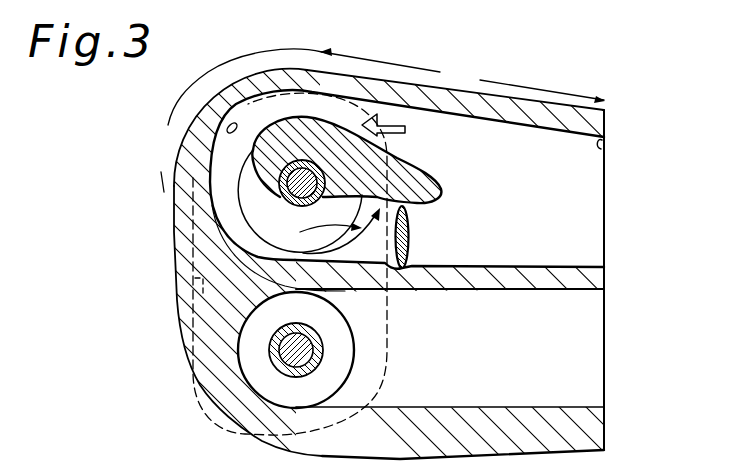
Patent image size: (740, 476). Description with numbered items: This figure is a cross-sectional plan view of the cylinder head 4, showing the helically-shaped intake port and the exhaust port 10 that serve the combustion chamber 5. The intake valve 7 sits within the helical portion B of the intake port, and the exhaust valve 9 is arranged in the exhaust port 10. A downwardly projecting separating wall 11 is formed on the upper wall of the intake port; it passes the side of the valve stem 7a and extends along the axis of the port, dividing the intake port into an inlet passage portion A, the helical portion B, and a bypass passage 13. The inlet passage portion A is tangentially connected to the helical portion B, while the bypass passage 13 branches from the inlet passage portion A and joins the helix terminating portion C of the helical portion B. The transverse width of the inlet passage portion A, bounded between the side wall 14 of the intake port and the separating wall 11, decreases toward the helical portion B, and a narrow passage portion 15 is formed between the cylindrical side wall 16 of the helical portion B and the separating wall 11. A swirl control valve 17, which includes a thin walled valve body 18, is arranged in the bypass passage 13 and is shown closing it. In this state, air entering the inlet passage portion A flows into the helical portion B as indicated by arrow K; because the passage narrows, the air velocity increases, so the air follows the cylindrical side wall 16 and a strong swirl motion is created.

The cylinder head 4 is at (505, 114).
The combustion chamber 5 is at (200, 297).
The intake valve 7 is at (246, 178).
The valve stem 7a is at (293, 188).
The exhaust valve 9 is at (263, 387).
The exhaust port 10 is at (567, 383).
The separating wall 11 is at (398, 175).
The bypass passage 13 is at (364, 250).
The side wall 14 is at (602, 141).
The narrow passage portion 15 is at (250, 110).
The cylindrical side wall 16 is at (220, 114).
The swirl control valve 17 is at (422, 228).
The thin walled valve body 18 is at (406, 250).
The inlet passage portion A is at (462, 75).
The helical portion B is at (237, 120).
The helix terminating portion C is at (330, 231).
The arrow K is at (405, 130).